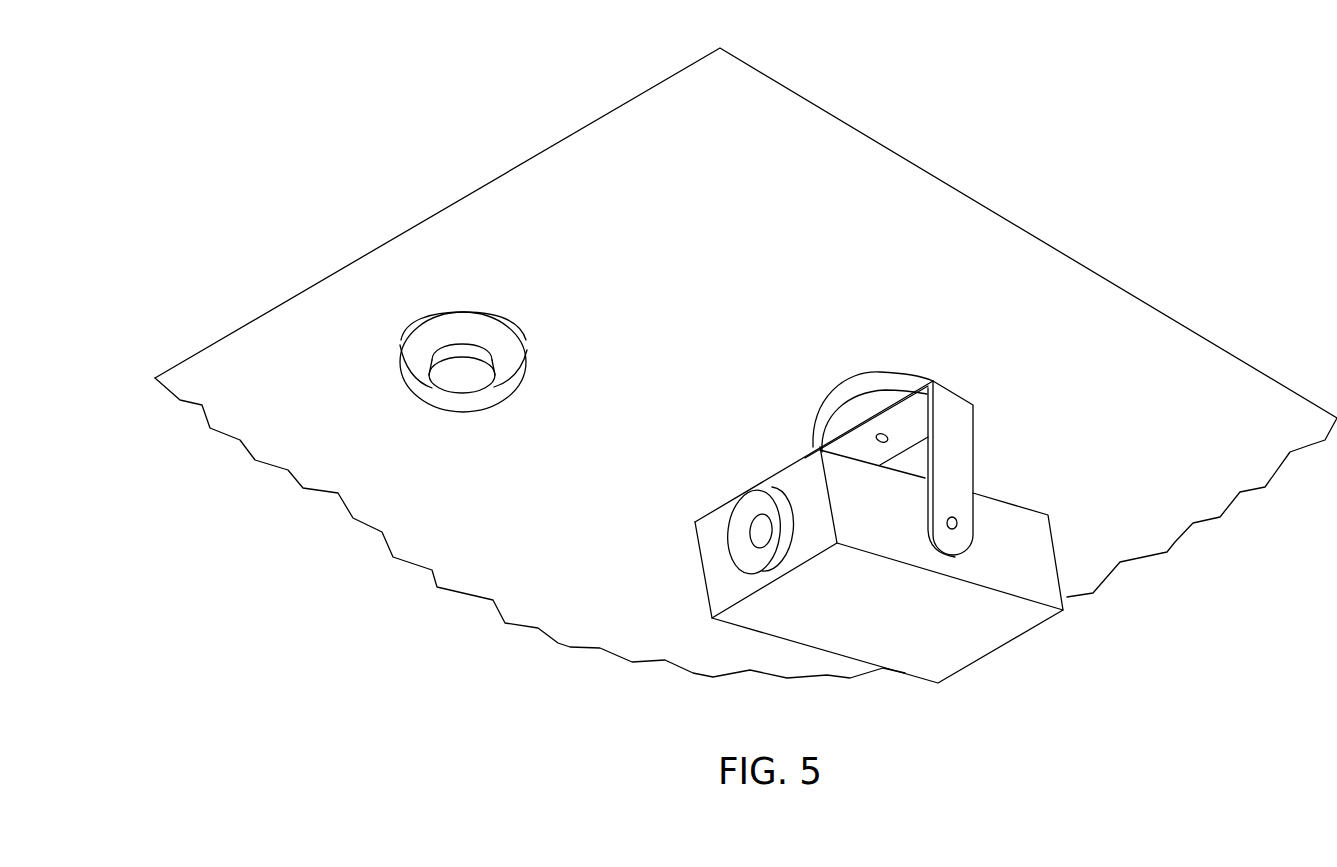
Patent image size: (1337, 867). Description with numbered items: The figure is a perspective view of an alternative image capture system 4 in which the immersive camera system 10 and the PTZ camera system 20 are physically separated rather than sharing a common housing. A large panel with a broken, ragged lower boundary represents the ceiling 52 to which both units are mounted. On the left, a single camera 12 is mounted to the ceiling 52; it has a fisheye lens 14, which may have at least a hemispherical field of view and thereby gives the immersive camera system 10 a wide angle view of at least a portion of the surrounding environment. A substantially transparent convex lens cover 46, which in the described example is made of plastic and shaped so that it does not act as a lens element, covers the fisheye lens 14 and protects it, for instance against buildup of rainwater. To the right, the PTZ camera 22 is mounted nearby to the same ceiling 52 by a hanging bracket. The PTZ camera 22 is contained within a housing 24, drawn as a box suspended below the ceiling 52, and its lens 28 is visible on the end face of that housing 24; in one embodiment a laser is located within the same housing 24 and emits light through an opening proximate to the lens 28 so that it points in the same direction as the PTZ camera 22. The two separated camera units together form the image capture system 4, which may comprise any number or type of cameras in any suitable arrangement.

The image capture system 4 is at (746, 363).
The immersive camera system 10 is at (746, 365).
The camera 12 is at (527, 349).
The fisheye lens 14 is at (462, 397).
The PTZ camera system 20 is at (981, 464).
The PTZ camera 22 is at (754, 492).
The housing 24 is at (860, 636).
The lens 28 is at (715, 542).
The lens cover 46 is at (440, 362).
The ceiling 52 is at (759, 189).